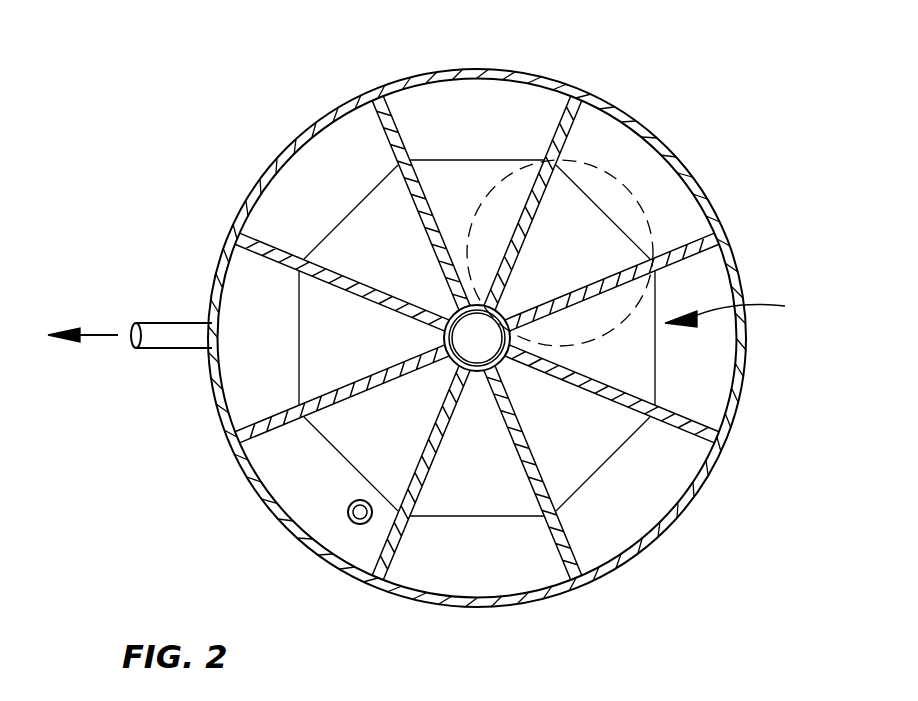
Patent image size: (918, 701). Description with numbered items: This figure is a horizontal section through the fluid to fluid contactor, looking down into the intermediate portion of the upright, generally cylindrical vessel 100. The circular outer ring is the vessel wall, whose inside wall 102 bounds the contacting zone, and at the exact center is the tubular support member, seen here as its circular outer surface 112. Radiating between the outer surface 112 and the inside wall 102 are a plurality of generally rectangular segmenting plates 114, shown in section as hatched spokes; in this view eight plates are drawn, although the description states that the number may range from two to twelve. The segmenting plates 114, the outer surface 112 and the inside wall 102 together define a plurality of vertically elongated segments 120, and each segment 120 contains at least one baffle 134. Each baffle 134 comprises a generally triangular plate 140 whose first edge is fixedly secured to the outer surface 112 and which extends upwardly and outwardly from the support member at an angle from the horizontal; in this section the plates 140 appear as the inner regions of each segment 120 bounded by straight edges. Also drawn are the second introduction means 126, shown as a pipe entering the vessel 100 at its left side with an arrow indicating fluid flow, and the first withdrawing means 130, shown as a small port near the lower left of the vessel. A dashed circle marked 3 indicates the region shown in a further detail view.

The generally cylindrical vessel 100 is at (548, 74).
The inside wall 102 is at (688, 183).
The outer surface 112 is at (478, 300).
The generally rectangular segmenting plates 114 is at (405, 88).
The vertically elongated segments 120 is at (480, 332).
The generally triangular plate 140 is at (476, 325).
The second introduction means 126 is at (165, 350).
The first withdrawing means 130 is at (352, 524).
The baffle 134 is at (749, 308).
The section line for FIG. 3 is at (673, 150).